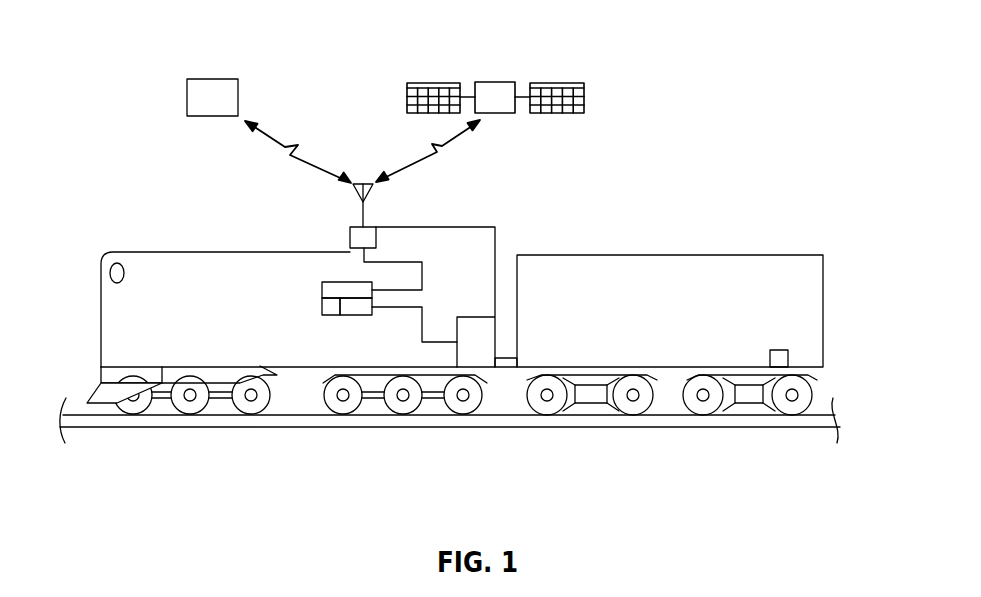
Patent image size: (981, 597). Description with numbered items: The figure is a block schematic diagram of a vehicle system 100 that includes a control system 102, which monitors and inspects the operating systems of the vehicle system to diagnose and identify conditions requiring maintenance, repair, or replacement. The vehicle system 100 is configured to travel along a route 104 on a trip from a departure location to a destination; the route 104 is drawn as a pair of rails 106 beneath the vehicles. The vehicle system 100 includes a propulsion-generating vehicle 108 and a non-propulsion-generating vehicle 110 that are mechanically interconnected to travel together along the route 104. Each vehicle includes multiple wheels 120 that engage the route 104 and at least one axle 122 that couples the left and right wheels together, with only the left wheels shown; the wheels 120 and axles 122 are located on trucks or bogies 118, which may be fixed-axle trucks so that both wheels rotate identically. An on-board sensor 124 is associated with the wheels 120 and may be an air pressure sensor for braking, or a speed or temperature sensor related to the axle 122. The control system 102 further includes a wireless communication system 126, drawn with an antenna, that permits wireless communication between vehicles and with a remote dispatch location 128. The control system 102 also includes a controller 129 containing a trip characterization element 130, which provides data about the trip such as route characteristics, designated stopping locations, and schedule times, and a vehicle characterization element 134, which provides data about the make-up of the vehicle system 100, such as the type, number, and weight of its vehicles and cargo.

The vehicle system 100 is at (243, 211).
The control system 102 is at (520, 245).
The route 104 is at (431, 452).
The rail 106 is at (217, 430).
The propulsion-generating vehicle 108 is at (212, 251).
The non-propulsion-generating vehicle 110 is at (742, 324).
The trucks or bogies 118 is at (613, 378).
The wheels 120 is at (325, 402).
The axle 122 is at (343, 400).
The on-board sensor 124 is at (780, 350).
The wireless communication system 126 is at (350, 237).
The remote location 128 is at (212, 78).
The controller 129 is at (332, 289).
The trip characterization element 130 is at (322, 305).
The vehicle characterization element 134 is at (352, 315).